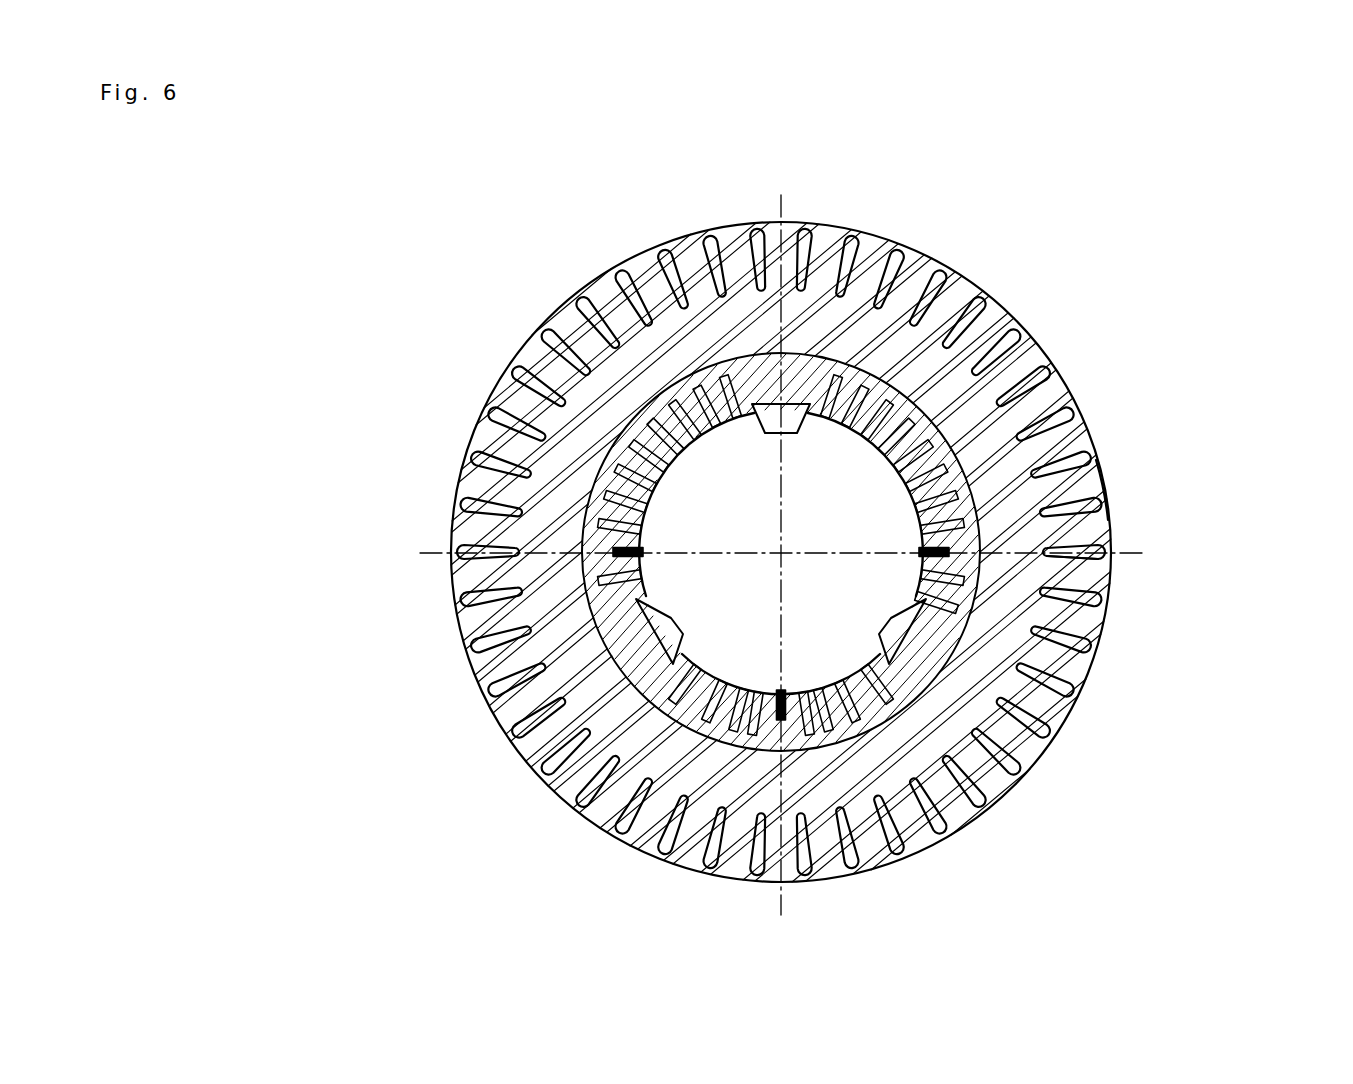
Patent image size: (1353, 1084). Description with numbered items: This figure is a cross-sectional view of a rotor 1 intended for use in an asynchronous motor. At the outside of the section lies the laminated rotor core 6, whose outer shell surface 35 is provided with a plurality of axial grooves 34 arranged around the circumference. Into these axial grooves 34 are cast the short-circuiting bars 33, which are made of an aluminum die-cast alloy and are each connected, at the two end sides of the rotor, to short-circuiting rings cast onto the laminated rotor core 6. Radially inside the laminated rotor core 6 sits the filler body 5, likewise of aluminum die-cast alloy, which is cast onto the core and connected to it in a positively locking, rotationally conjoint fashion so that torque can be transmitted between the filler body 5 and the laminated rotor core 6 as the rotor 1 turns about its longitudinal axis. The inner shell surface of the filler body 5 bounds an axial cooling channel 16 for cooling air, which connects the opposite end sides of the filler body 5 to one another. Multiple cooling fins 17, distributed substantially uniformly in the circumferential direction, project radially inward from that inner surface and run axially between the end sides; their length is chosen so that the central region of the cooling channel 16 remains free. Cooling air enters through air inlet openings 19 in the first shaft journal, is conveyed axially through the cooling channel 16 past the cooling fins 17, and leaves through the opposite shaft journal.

The rotor 1 is at (330, 403).
The filler body 5 is at (768, 405).
The laminated rotor core 6 is at (957, 437).
The axial cooling channel 16 is at (840, 510).
The cooling fins 17 is at (917, 688).
The air inlet openings 19 is at (665, 680).
The short-circuiting bars 33 is at (1107, 507).
The axial grooves 34 is at (1108, 521).
The outer shell surface 35 is at (1123, 490).